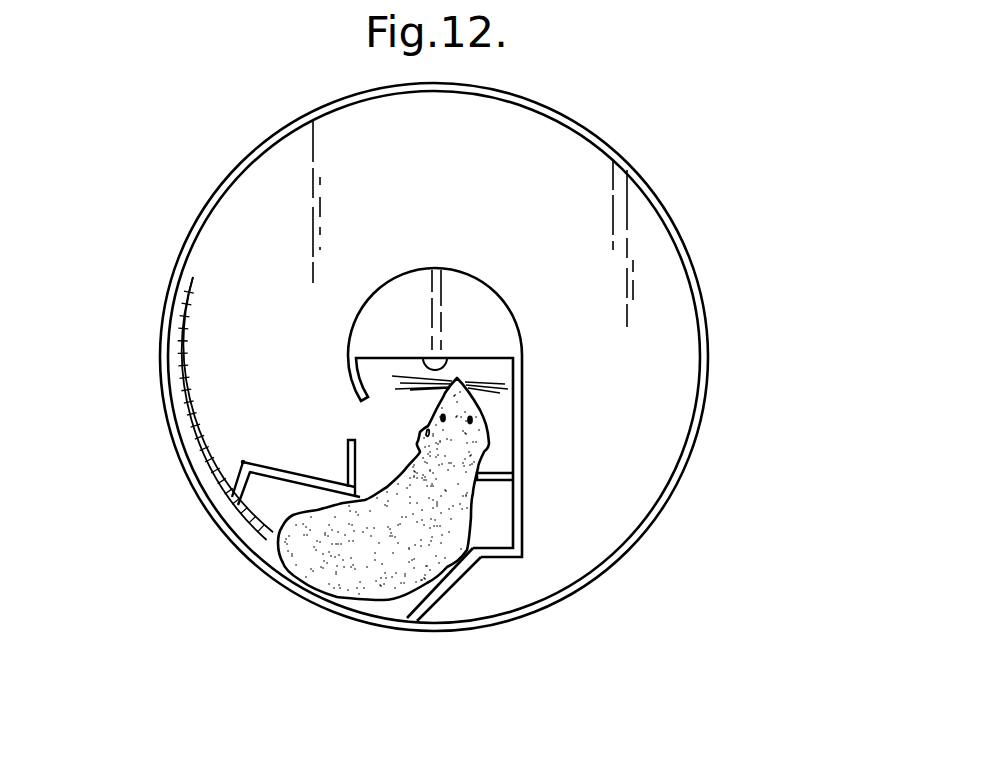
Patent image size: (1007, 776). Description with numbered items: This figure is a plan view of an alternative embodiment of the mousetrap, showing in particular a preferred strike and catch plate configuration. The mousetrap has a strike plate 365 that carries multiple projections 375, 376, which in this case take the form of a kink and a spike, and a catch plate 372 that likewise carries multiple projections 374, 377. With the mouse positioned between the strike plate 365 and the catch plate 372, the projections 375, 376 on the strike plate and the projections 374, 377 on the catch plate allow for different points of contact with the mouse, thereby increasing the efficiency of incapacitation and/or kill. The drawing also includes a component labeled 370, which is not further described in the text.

The strike plate 365 is at (293, 468).
The nose cone 370 is at (454, 310).
The catch plate 372 is at (522, 518).
The projection 374 is at (491, 471).
The projection 375 is at (243, 462).
The projection 376 is at (347, 483).
The projection 377 is at (480, 553).